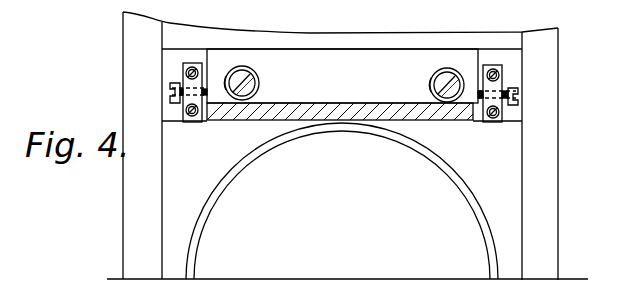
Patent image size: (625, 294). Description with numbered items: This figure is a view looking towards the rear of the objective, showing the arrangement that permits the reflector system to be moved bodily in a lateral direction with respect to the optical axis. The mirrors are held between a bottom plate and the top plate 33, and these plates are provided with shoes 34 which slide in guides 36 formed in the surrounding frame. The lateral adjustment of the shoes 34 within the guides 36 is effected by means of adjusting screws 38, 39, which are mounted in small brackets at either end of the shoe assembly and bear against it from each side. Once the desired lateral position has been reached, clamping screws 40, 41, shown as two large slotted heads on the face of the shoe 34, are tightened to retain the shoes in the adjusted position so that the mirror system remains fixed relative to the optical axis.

The top plate 33 is at (413, 122).
The shoes 34 is at (342, 76).
The guides 36 is at (505, 53).
The adjusting screw 38 is at (172, 103).
The adjusting screw 39 is at (518, 102).
The clamping screw 40 is at (247, 90).
The clamping screw 41 is at (447, 80).